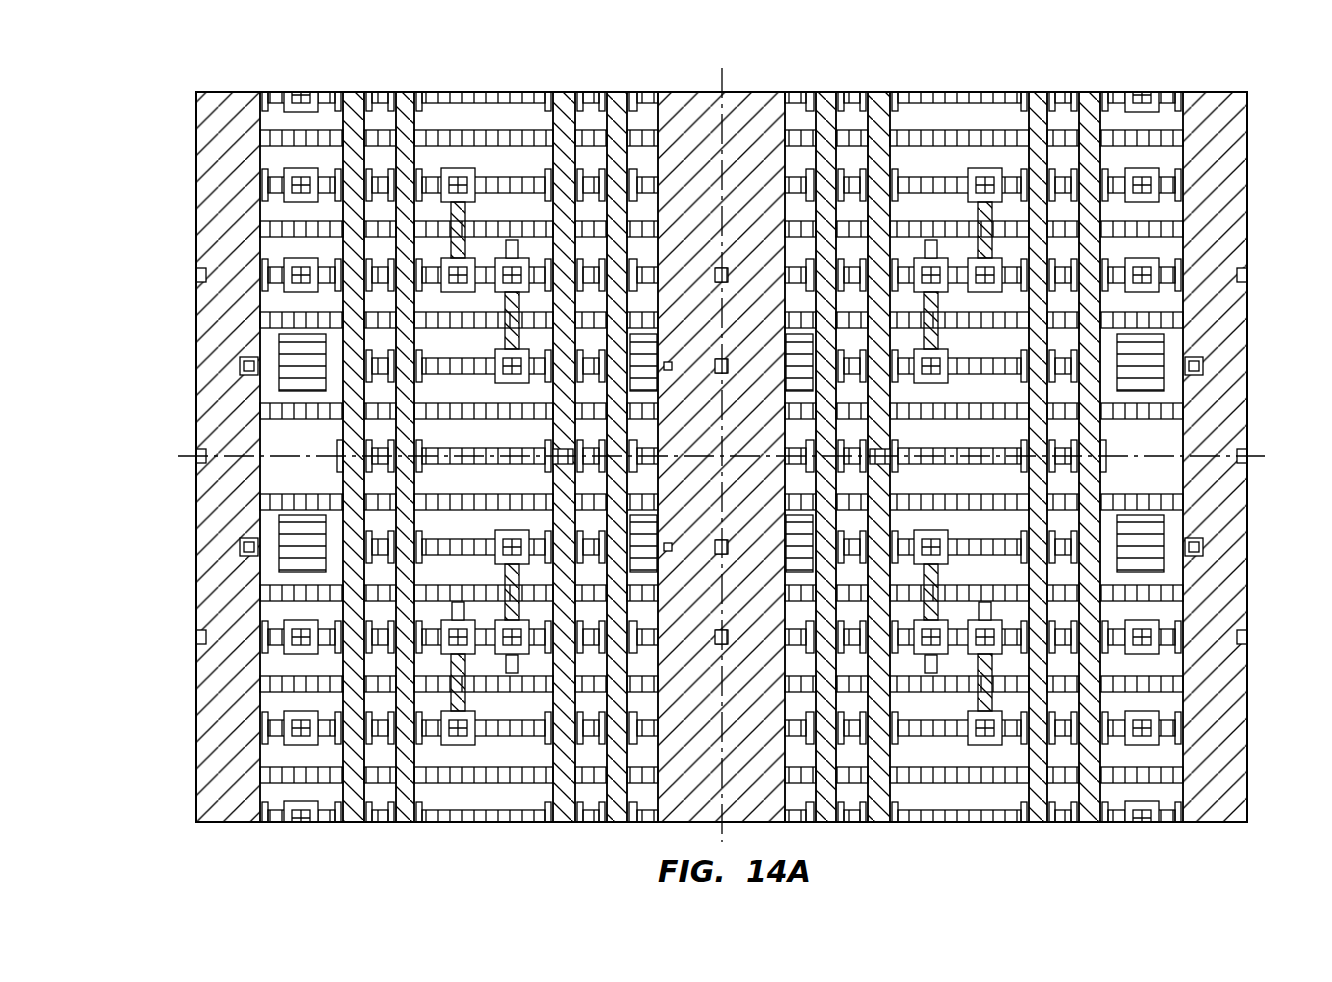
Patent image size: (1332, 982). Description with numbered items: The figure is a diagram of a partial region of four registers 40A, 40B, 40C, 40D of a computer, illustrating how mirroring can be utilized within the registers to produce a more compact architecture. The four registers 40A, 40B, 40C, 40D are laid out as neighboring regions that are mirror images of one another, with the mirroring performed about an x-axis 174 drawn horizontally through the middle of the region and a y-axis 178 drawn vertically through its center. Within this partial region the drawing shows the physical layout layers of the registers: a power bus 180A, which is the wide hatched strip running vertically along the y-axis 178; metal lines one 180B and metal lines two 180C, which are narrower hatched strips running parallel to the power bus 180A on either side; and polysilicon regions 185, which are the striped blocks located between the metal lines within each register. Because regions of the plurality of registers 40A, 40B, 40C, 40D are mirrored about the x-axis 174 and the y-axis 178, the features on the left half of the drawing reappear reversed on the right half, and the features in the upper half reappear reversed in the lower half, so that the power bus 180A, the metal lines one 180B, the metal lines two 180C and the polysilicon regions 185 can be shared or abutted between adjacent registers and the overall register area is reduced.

The register 40A is at (300, 86).
The register 40B is at (1138, 86).
The register 40C is at (405, 830).
The register 40D is at (1032, 830).
The x-axis 174 is at (185, 452).
The y-axis 178 is at (722, 68).
The power bus 180A is at (747, 120).
The metal lines one 180B is at (821, 98).
The metal lines two 180C is at (881, 100).
The polysilicon regions 185 is at (1175, 351).